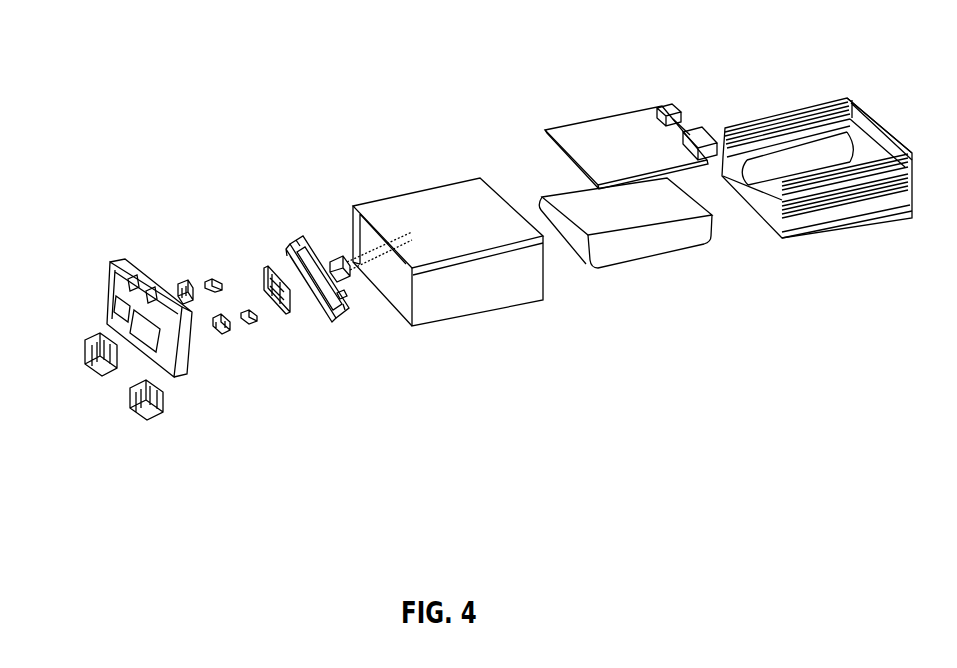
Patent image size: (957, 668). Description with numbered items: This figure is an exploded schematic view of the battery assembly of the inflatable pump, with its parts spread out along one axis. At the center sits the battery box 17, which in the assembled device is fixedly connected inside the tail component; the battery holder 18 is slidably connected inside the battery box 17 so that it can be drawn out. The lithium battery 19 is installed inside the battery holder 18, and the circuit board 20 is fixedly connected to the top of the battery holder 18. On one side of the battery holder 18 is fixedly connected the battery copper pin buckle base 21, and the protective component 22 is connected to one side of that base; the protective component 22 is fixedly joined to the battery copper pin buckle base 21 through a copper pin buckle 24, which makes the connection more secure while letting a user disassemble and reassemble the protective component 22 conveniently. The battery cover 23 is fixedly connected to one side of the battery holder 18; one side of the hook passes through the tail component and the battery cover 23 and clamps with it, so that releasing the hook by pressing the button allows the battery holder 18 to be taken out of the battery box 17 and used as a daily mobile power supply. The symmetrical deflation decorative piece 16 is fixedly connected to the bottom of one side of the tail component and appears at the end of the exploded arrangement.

The deflation decorative piece 16 is at (82, 347).
The battery box 17 is at (480, 292).
The battery holder 18 is at (816, 140).
The lithium battery 19 is at (657, 242).
The circuit board 20 is at (637, 130).
The battery copper pin buckle base 21 is at (317, 287).
The protective component 22 is at (267, 267).
The battery cover 23 is at (118, 290).
The copper pin buckle 24 is at (177, 278).